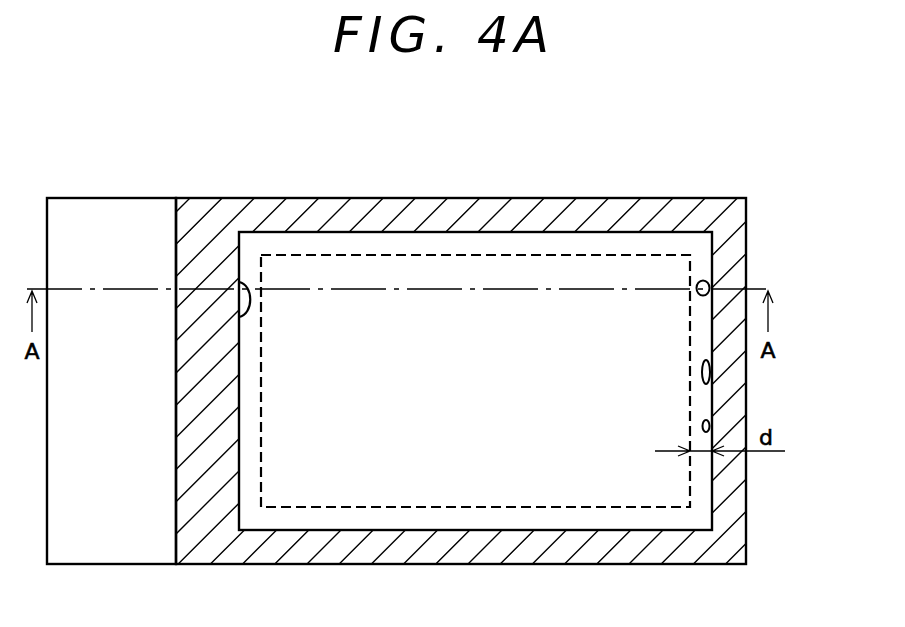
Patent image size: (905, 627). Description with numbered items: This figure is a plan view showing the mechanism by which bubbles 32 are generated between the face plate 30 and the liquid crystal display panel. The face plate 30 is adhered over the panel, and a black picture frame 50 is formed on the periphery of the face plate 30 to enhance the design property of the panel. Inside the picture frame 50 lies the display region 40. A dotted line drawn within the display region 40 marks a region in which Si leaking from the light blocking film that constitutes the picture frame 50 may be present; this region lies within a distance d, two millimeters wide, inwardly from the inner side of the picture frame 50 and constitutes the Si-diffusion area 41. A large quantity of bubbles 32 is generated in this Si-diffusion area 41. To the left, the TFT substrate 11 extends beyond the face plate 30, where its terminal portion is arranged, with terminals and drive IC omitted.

The TFT substrate 11 is at (115, 213).
The face plate 30 is at (747, 519).
The bubbles 32 is at (243, 282).
The display region 40 is at (644, 272).
The Si-diffusion area 41 is at (555, 255).
The picture frame 50 is at (475, 212).